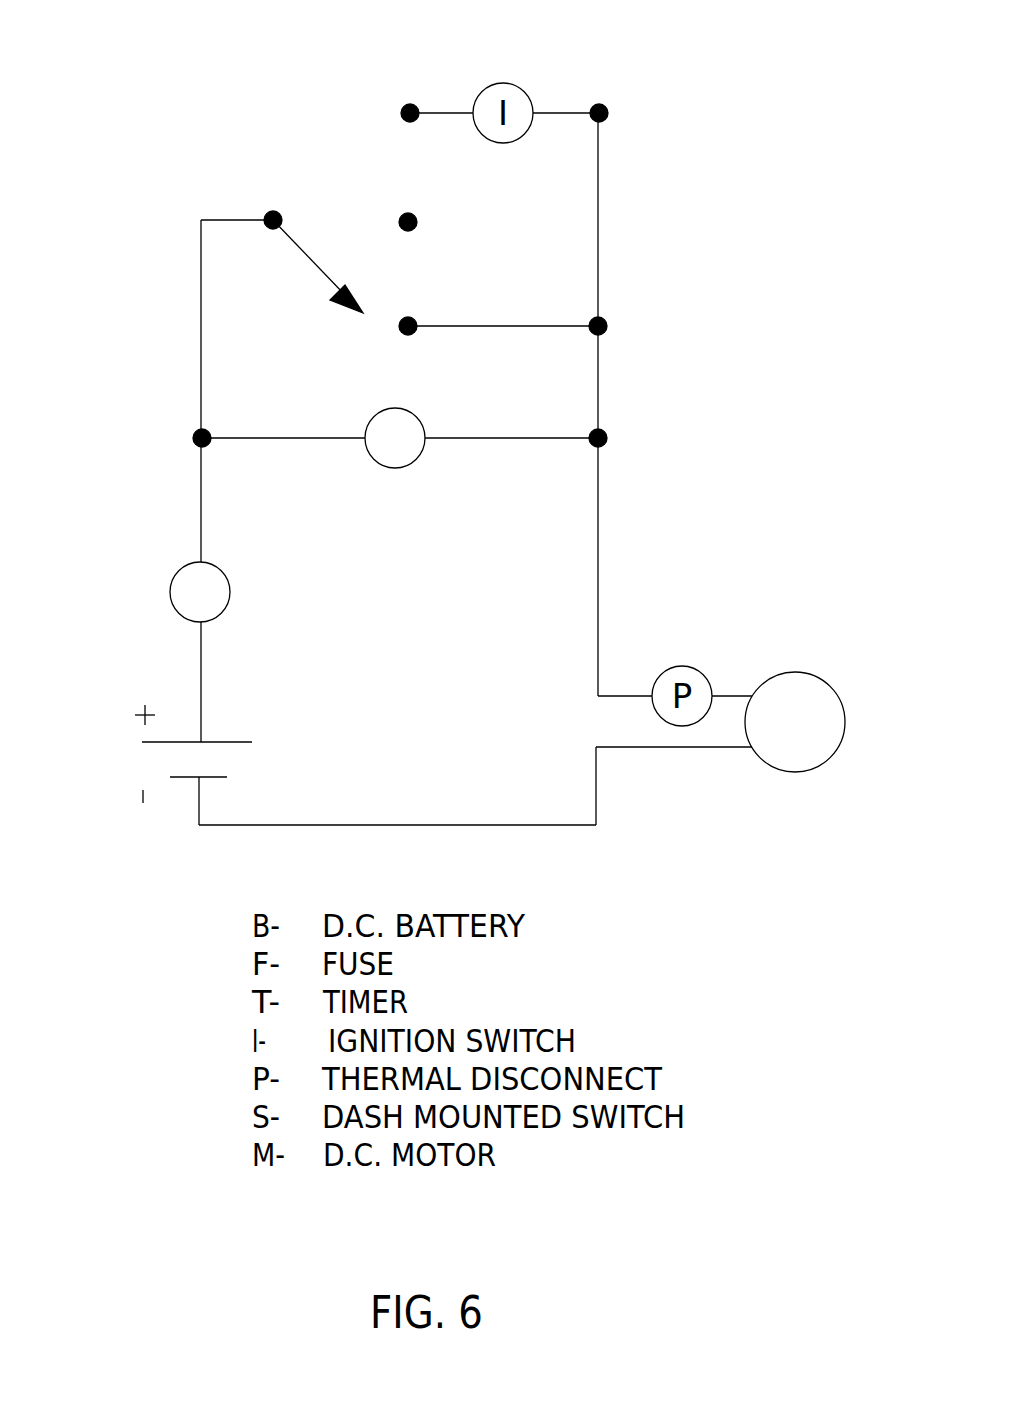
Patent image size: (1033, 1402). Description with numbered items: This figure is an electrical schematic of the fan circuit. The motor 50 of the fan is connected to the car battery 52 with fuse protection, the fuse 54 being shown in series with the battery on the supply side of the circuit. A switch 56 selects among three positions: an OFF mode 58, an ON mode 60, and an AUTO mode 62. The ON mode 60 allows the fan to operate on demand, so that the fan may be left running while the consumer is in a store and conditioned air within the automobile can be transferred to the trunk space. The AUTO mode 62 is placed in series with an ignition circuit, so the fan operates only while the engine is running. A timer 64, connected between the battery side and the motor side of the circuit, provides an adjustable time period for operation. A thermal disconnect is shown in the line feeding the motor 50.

The motor 50 is at (818, 767).
The car battery 52 is at (267, 780).
The fuse 54 is at (170, 572).
The switch 56 is at (218, 182).
The OFF mode 58 is at (727, 200).
The ON mode 60 is at (718, 325).
The AUTO mode 62 is at (720, 95).
The timer 64 is at (360, 415).